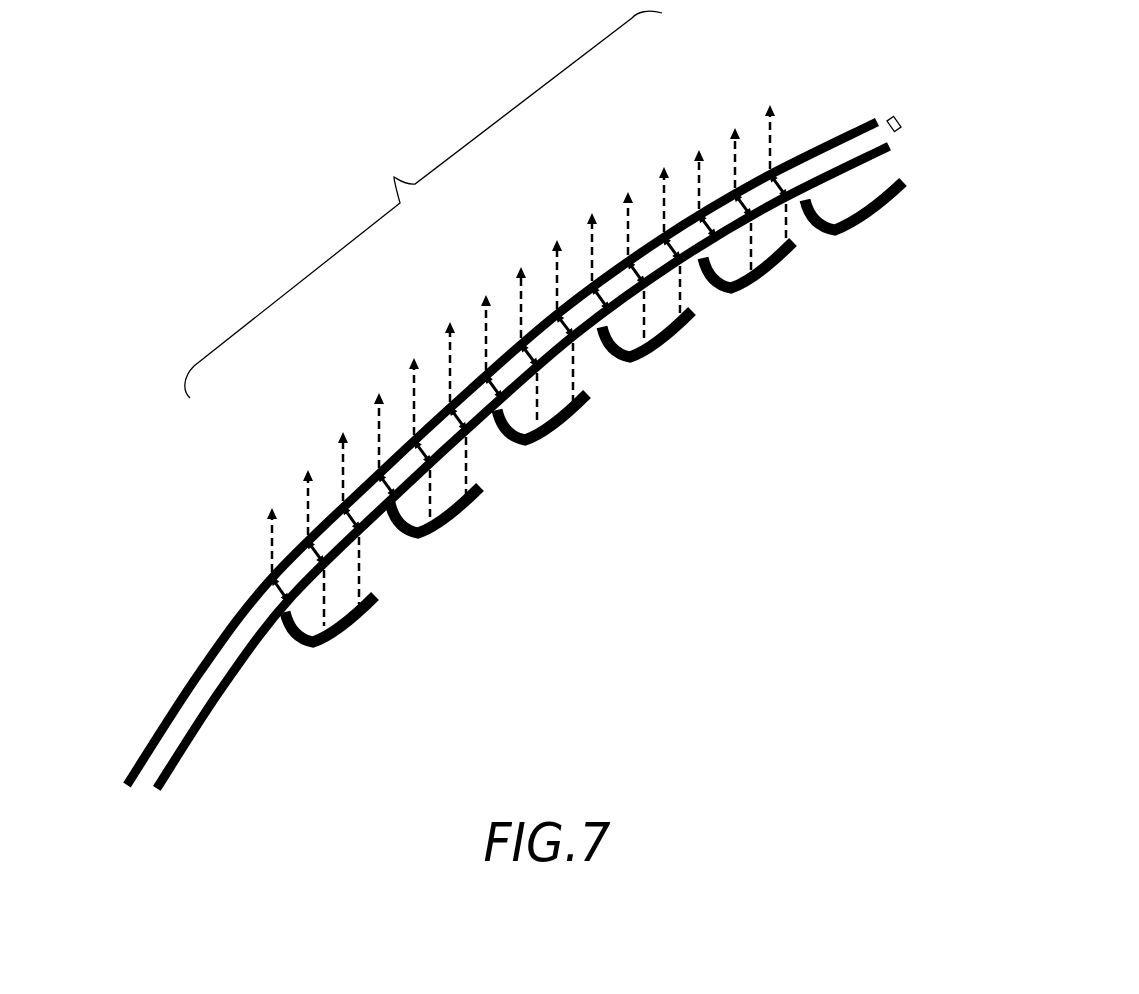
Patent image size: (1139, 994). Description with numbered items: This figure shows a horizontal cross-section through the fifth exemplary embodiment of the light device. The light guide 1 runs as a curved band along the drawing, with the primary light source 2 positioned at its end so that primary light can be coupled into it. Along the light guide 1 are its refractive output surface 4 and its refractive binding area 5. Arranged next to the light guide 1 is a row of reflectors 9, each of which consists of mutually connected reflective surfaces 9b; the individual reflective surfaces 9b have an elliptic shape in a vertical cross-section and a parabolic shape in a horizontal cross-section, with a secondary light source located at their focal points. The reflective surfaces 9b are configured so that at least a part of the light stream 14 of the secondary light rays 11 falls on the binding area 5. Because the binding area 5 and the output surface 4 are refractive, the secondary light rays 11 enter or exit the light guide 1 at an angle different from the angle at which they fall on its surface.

The light guide 1 is at (863, 114).
The primary light source 2 is at (911, 130).
The output surface 4 is at (785, 159).
The binding area 5 is at (843, 184).
The reflector 9 is at (703, 453).
The reflective surface 9b is at (307, 618).
The secondary light rays 11 is at (277, 494).
The light stream 14 is at (423, 204).